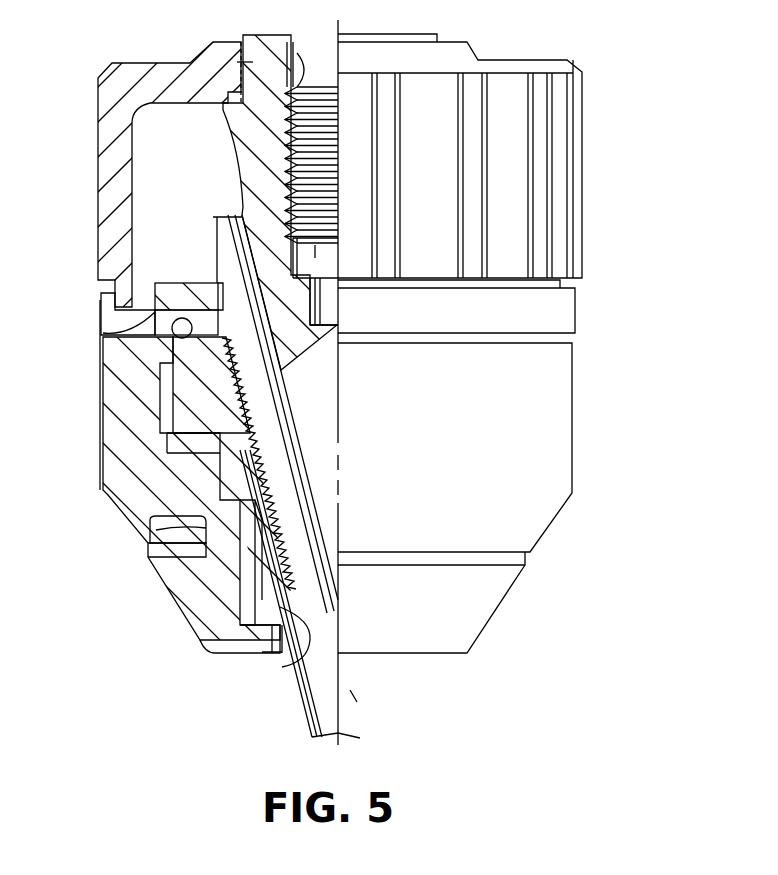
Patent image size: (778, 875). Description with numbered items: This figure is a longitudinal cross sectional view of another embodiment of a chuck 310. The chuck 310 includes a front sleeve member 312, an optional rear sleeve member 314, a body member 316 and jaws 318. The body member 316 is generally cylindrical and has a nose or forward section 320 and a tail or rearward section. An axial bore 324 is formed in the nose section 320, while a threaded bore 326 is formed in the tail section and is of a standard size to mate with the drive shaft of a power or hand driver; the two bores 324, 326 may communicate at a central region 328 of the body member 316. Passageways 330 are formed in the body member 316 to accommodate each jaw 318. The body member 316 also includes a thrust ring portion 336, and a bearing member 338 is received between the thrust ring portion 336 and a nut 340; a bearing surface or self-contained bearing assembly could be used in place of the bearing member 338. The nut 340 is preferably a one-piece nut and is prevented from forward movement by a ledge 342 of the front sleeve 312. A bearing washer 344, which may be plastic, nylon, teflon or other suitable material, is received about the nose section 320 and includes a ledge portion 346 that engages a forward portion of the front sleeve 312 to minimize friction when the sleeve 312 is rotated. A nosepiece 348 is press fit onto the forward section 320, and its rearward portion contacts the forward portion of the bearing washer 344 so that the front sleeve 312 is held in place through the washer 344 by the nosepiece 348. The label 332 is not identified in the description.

The chuck 310 is at (598, 125).
The front sleeve member 312 is at (103, 490).
The rear sleeve member 314 is at (98, 120).
The body member 316 is at (227, 170).
The jaws 318 is at (278, 428).
The nose section 320 is at (247, 607).
The axial bore 324 is at (298, 660).
The threaded bore 326 is at (257, 100).
The central region 328 is at (330, 305).
The passageways 330 is at (285, 545).
The flange 332 is at (237, 60).
The thrust ring portion 336 is at (178, 283).
The bearing member 338 is at (105, 345).
The nut 340 is at (183, 387).
The ledge 342 is at (177, 440).
The bearing washer 344 is at (175, 550).
The ledge portion 346 is at (160, 540).
The nosepiece 348 is at (223, 647).